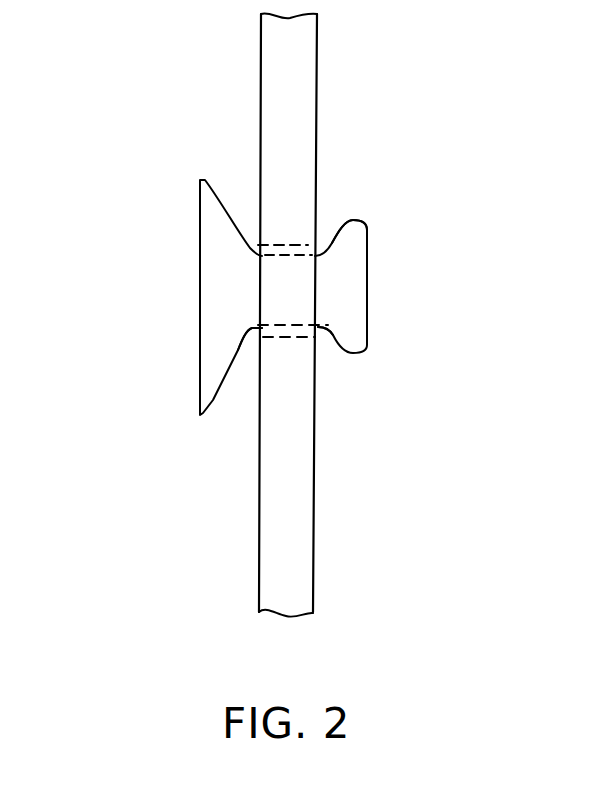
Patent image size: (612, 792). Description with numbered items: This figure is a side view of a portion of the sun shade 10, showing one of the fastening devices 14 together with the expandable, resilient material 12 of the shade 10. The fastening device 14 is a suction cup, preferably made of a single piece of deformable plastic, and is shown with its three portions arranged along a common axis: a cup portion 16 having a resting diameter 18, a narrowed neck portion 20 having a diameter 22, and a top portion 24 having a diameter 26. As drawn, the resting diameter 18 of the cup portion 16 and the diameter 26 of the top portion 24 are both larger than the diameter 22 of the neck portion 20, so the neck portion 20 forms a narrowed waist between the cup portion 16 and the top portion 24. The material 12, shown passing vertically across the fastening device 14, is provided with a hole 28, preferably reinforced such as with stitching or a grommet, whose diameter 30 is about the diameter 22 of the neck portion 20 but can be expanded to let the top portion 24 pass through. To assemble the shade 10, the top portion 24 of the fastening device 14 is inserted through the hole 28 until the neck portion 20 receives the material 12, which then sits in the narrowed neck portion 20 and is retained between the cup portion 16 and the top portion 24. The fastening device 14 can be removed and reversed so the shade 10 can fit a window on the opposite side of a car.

The sun shade 10 is at (396, 154).
The material 12 is at (292, 47).
The fastening device 14 is at (368, 317).
The cup portion 16 is at (215, 405).
The resting diameter 18 is at (103, 416).
The neck portion 20 is at (322, 326).
The diameter of the neck portion 22 is at (295, 255).
The top portion 24 is at (368, 272).
The diameter of the top portion 26 is at (352, 351).
The hole 28 is at (287, 337).
The diameter of the hole 30 is at (288, 245).